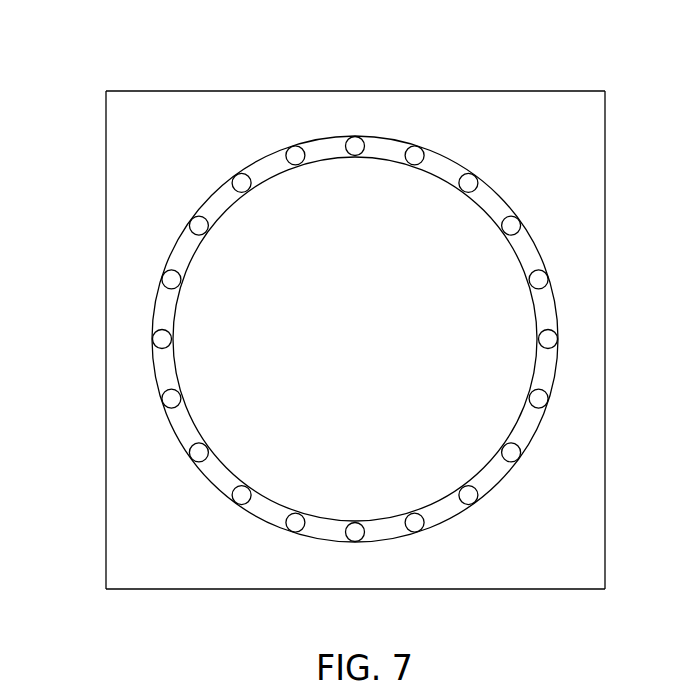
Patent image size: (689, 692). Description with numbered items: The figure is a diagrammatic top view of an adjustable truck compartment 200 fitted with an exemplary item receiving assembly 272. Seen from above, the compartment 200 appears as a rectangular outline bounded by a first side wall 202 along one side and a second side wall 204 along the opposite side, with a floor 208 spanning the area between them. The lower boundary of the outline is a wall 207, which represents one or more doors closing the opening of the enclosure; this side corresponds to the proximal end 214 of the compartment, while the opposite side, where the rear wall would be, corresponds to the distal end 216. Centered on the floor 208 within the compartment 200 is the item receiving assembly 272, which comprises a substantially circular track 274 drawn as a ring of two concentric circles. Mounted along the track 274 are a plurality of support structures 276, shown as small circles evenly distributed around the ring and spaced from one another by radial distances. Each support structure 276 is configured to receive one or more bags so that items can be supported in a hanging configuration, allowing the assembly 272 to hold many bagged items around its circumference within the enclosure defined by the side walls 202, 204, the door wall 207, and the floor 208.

The adjustable truck compartment 200 is at (547, 60).
The first side wall 202 is at (106, 238).
The second side wall 204 is at (605, 352).
The wall 207 is at (236, 589).
The floor 208 is at (120, 507).
The proximal end 214 is at (499, 603).
The distal end 216 is at (463, 82).
The item receiving assembly 272 is at (356, 136).
The circular track 274 is at (152, 315).
The support structure 276 is at (165, 403).